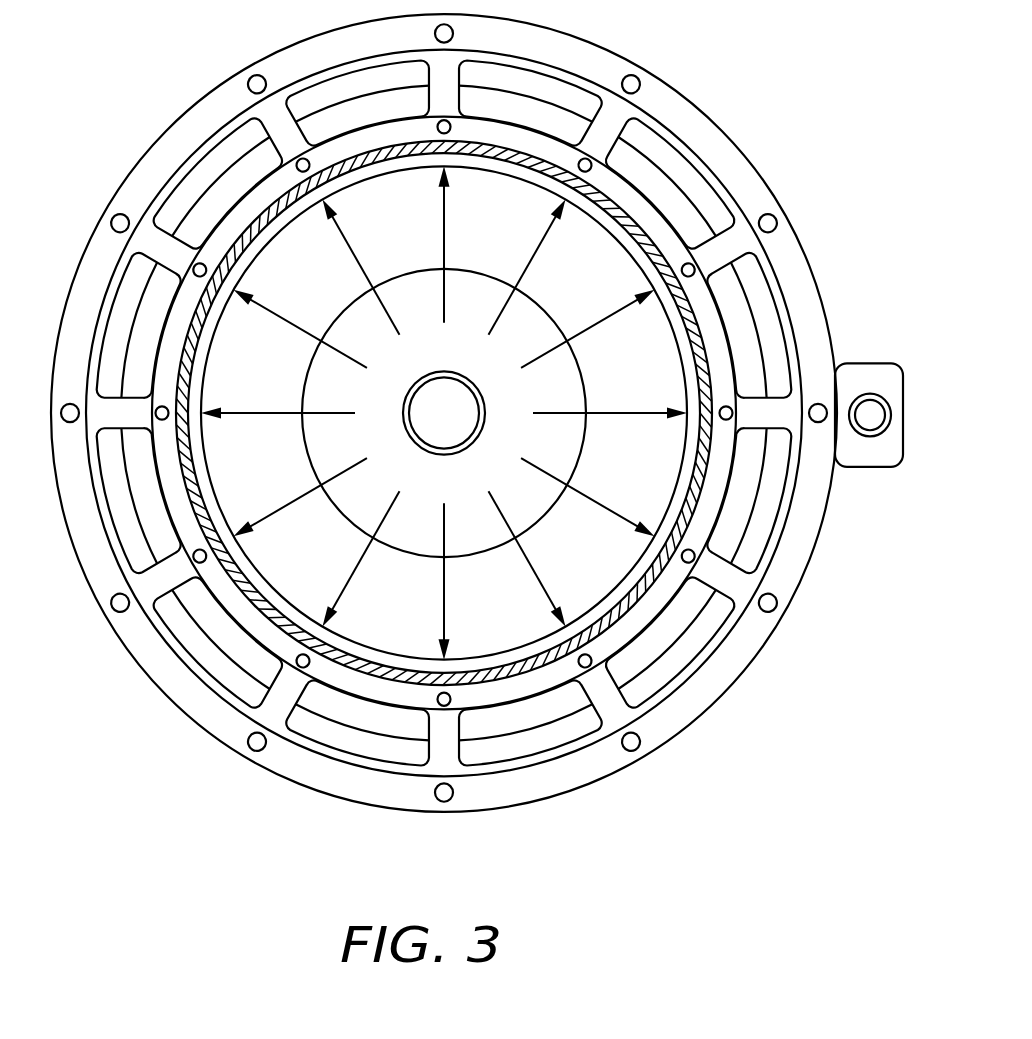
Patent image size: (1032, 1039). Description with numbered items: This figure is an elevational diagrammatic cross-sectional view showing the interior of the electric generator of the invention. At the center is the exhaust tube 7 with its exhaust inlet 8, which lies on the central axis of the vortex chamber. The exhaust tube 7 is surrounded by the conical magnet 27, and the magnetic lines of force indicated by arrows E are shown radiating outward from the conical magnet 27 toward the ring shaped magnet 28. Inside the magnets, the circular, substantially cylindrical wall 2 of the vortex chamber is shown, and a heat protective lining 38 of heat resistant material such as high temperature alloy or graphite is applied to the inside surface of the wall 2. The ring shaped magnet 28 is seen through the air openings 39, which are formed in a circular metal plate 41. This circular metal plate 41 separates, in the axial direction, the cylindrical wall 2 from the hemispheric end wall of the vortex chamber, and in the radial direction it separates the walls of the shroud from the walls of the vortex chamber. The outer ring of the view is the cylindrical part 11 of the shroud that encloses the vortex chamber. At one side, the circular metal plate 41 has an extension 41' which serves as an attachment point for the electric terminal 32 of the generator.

The cylindrical wall 2 is at (444, 413).
The exhaust tube 7 is at (464, 412).
The exhaust inlet 8 is at (444, 412).
The cylindrical part 11 is at (262, 251).
The conical magnet 27 is at (470, 413).
The ring shaped magnet 28 is at (513, 413).
The electric terminal 32 is at (890, 448).
The heat protective lining 38 is at (444, 412).
The air openings 39 is at (322, 125).
The circular metal plate 41 is at (488, 413).
The extension 41' is at (869, 438).
The magnetic lines of force arrows E is at (444, 412).